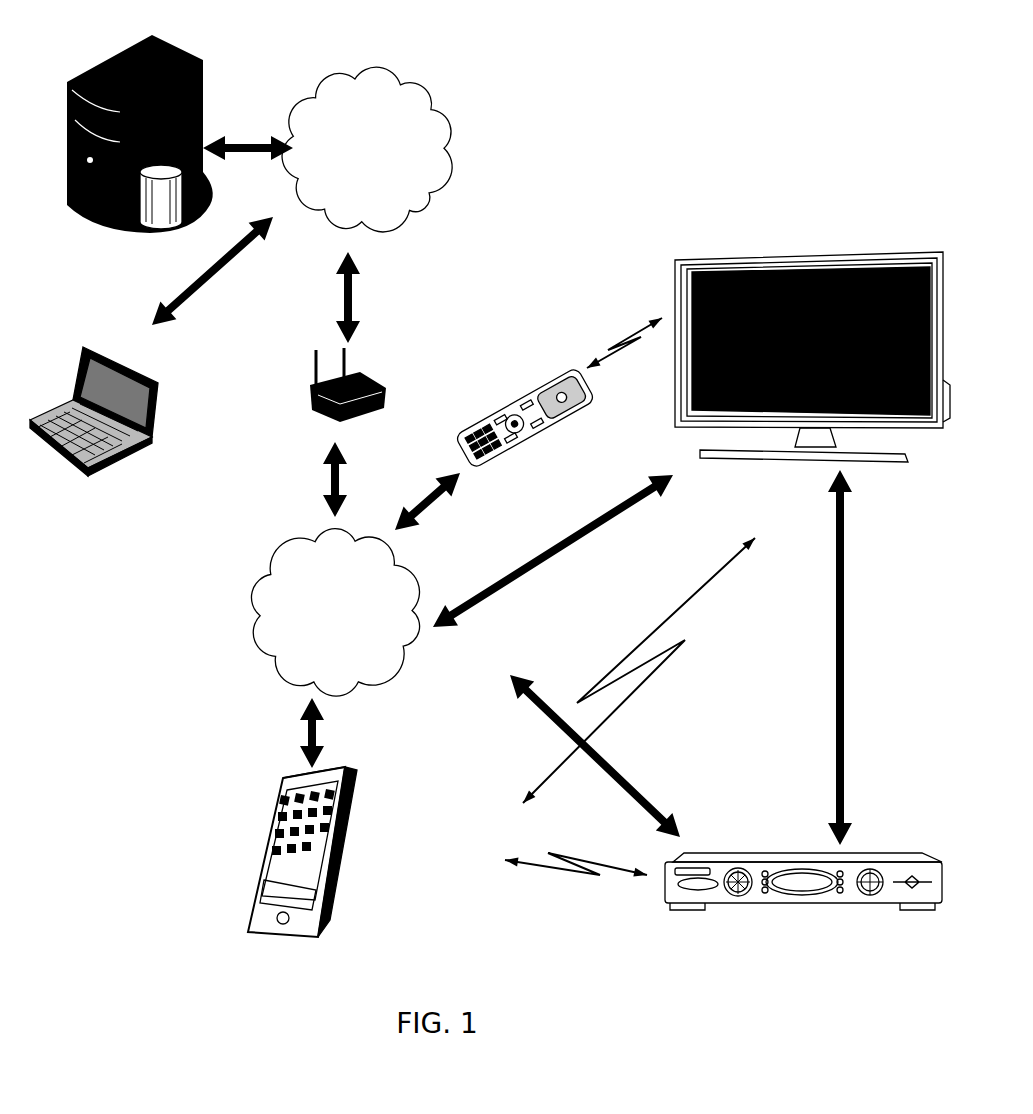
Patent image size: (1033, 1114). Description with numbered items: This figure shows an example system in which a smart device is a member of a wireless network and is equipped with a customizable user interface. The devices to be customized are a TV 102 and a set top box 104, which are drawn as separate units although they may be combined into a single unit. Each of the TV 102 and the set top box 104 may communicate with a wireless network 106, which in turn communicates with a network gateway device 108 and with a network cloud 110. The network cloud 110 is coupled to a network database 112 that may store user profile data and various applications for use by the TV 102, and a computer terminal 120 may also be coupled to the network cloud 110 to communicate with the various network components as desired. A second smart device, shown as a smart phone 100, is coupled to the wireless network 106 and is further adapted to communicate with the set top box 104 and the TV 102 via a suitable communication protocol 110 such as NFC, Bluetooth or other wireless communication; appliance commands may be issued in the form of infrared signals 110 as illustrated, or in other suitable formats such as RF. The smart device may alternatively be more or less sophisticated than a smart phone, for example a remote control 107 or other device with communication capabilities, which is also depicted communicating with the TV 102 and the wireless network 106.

The smart phone 100 is at (345, 852).
The TV 102 is at (788, 253).
The set top box 104 is at (745, 903).
The wireless network 106 is at (272, 588).
The remote control 107 is at (478, 420).
The network gateway device 108 is at (370, 387).
The network cloud 110 is at (437, 93).
The network database 112 is at (200, 60).
The computer terminal 120 is at (120, 463).